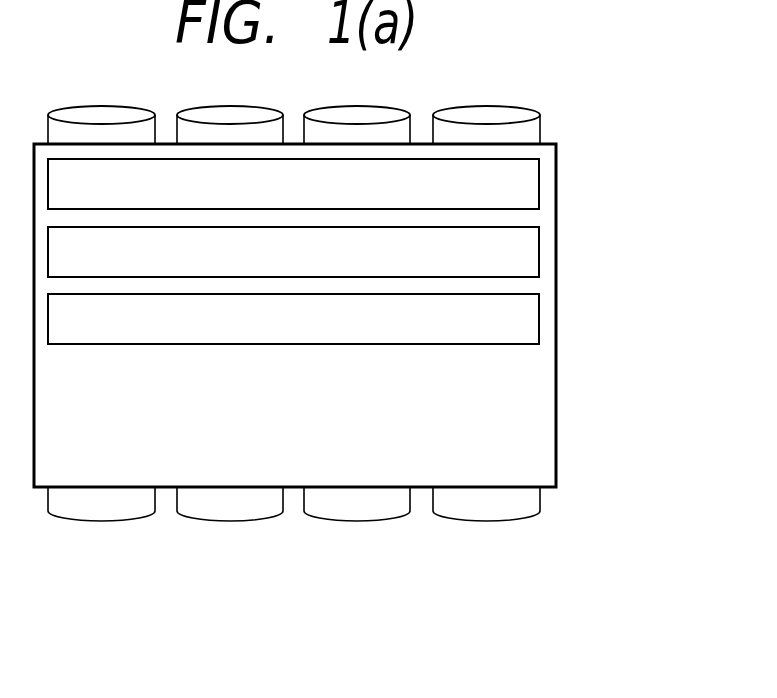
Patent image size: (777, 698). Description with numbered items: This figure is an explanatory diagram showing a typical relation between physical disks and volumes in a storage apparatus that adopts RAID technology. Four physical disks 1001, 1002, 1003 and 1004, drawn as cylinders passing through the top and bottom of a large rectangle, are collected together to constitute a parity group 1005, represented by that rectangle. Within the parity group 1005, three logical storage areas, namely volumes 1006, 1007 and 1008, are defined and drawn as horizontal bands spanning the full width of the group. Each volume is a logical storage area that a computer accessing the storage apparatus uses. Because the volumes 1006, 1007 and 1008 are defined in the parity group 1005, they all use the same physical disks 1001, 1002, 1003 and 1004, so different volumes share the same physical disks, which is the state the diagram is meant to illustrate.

The physical disk 1001 is at (78, 520).
The physical disk 1002 is at (205, 520).
The physical disk 1003 is at (333, 520).
The physical disk 1004 is at (462, 520).
The parity group 1005 is at (556, 422).
The volume 1006 is at (539, 313).
The volume 1007 is at (539, 247).
The volume 1008 is at (539, 183).